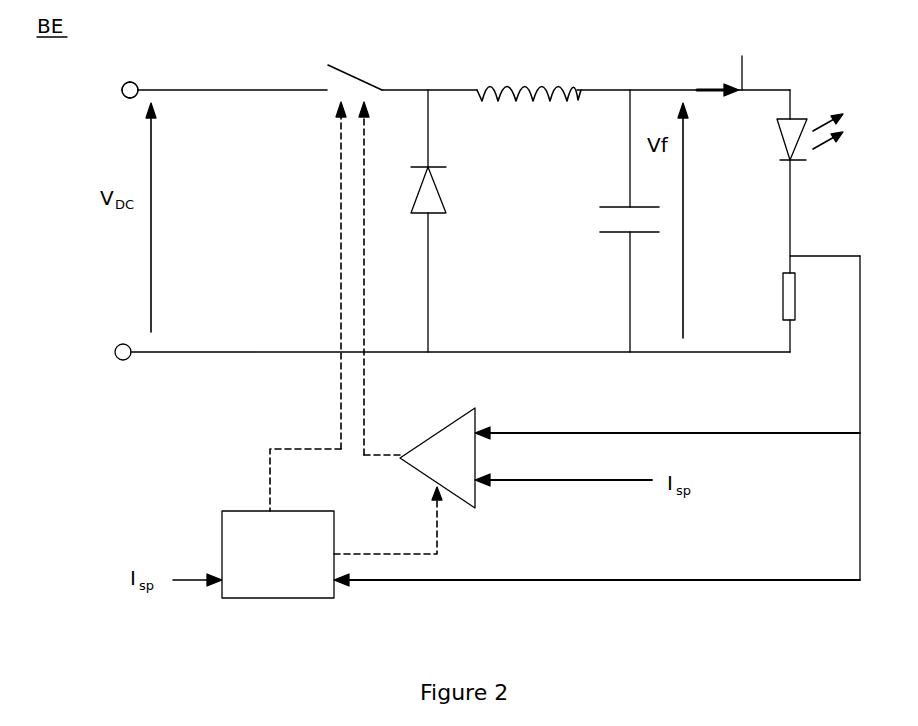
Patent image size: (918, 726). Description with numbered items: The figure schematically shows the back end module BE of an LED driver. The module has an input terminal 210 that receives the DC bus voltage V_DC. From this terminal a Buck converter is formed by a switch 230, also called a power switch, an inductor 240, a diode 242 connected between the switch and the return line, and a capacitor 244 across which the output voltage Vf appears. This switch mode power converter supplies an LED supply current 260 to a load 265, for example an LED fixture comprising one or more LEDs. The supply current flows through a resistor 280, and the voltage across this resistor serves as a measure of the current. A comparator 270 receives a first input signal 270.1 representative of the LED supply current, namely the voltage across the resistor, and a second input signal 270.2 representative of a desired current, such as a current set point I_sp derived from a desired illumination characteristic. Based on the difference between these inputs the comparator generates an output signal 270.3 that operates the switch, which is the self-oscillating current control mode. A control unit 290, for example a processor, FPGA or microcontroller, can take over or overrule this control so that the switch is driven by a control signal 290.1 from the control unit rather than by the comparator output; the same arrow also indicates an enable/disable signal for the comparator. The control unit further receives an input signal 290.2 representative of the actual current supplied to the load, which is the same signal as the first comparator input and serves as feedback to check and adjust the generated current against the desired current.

The input terminal 210 is at (124, 95).
The switch 230 is at (346, 85).
The inductor 240 is at (545, 92).
The diode 242 is at (433, 202).
The capacitor 244 is at (622, 227).
The LED supply current 260 is at (742, 56).
The load 265 is at (792, 140).
The resistor 280 is at (788, 297).
The comparator 270 is at (447, 450).
The first input signal 270.1 is at (530, 432).
The second input signal 270.2 is at (547, 482).
The output signal 270.3 is at (364, 320).
The control unit 290 is at (233, 533).
The control signal 290.1 is at (340, 268).
The input signal 290.2 is at (660, 580).